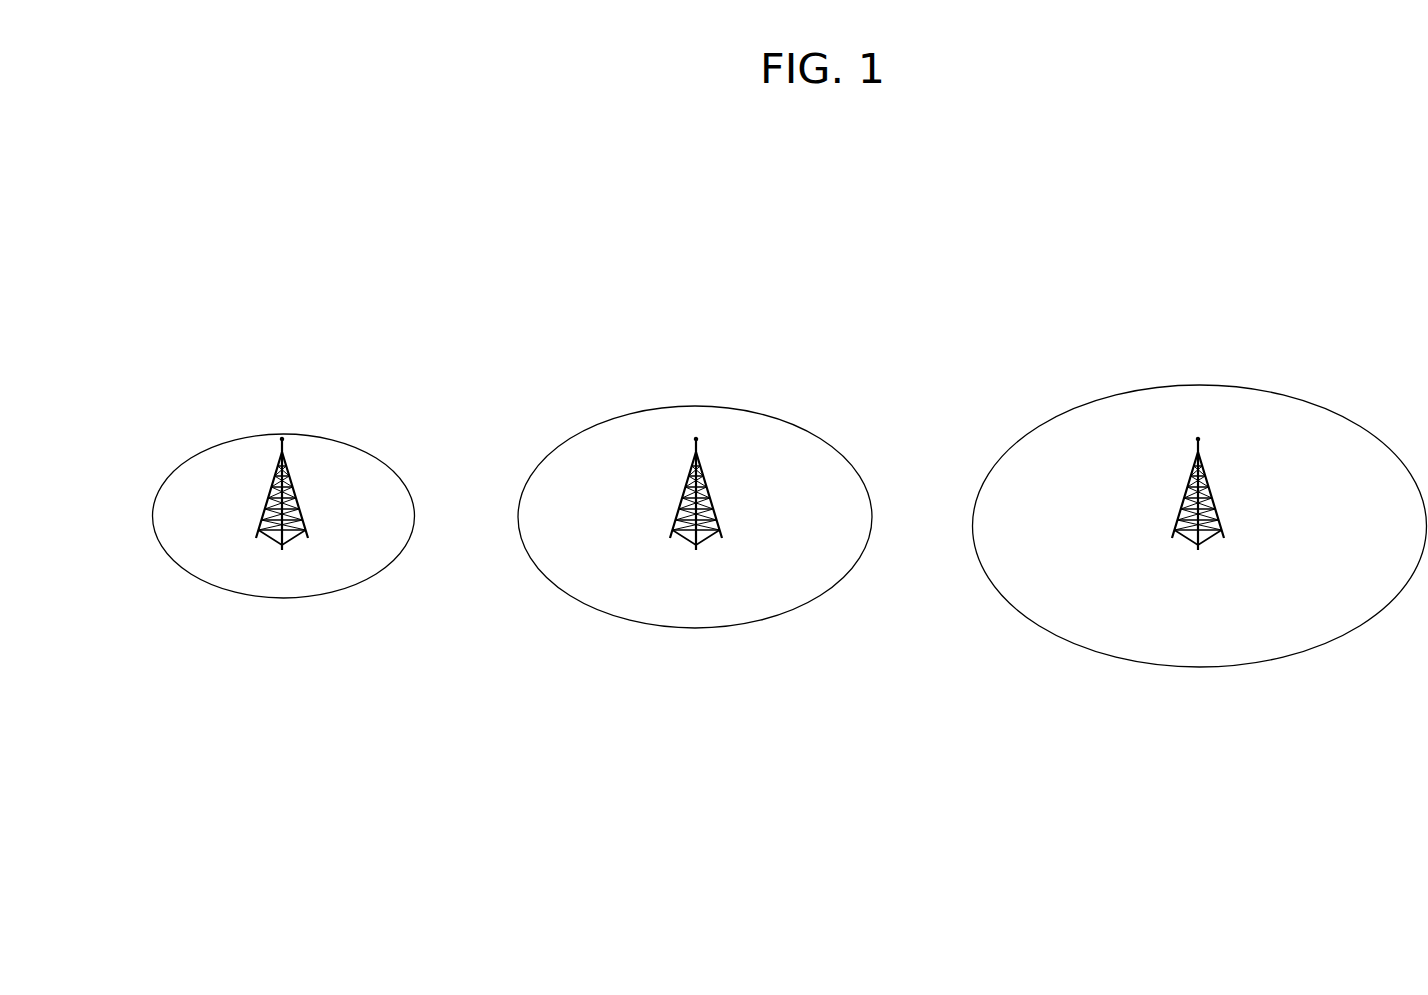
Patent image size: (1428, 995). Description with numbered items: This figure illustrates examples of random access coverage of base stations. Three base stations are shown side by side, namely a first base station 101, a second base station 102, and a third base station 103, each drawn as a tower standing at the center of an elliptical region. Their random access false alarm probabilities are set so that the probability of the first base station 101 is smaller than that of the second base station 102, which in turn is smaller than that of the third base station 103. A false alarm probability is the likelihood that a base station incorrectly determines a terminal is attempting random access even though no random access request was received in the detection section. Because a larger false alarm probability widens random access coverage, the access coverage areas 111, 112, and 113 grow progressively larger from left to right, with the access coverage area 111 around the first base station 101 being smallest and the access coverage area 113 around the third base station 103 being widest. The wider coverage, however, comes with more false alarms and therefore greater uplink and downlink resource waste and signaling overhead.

The base station 1 101 is at (275, 475).
The base station 2 102 is at (689, 475).
The base station 3 103 is at (1191, 475).
The access coverage area 111 is at (360, 449).
The access coverage area 112 is at (815, 436).
The access coverage area 113 is at (1361, 425).